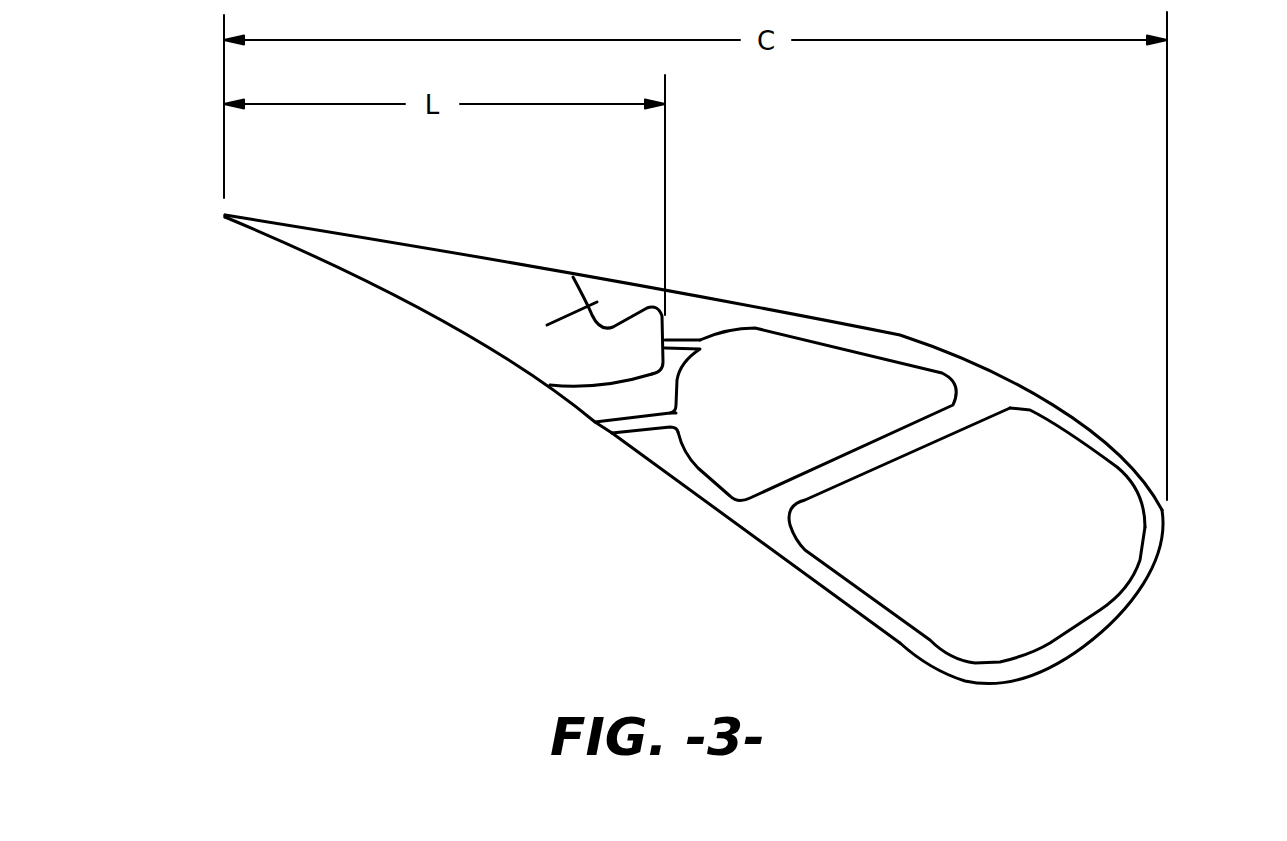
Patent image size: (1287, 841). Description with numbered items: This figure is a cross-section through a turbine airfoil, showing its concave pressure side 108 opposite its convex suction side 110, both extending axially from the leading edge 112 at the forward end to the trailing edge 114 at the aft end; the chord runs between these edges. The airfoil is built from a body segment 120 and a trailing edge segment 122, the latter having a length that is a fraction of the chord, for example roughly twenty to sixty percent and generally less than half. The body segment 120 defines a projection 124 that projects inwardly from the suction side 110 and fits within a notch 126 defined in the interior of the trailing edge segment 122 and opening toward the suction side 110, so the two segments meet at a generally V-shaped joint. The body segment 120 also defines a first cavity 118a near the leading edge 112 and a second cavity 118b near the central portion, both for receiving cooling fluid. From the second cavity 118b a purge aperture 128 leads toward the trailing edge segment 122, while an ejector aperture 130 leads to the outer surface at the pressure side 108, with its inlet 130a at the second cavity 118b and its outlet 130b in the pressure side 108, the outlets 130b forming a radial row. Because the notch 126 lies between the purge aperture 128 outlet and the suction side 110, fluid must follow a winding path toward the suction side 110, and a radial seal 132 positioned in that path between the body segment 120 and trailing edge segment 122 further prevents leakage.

The pressure side 108 is at (815, 590).
The suction side 110 is at (910, 325).
The leading edge 112 is at (1155, 588).
The trailing edge 114 is at (214, 217).
The first cavity 118a is at (1042, 579).
The second cavity 118b is at (800, 372).
The body segment 120 is at (993, 390).
The trailing edge segment 122 is at (415, 283).
The projection 124 is at (618, 295).
The notch 126 is at (593, 340).
The purge aperture 128 is at (685, 338).
The ejector aperture 130 is at (646, 428).
The inlet 130a is at (680, 418).
The outlet 130b is at (600, 430).
The radial seal 132 is at (560, 316).